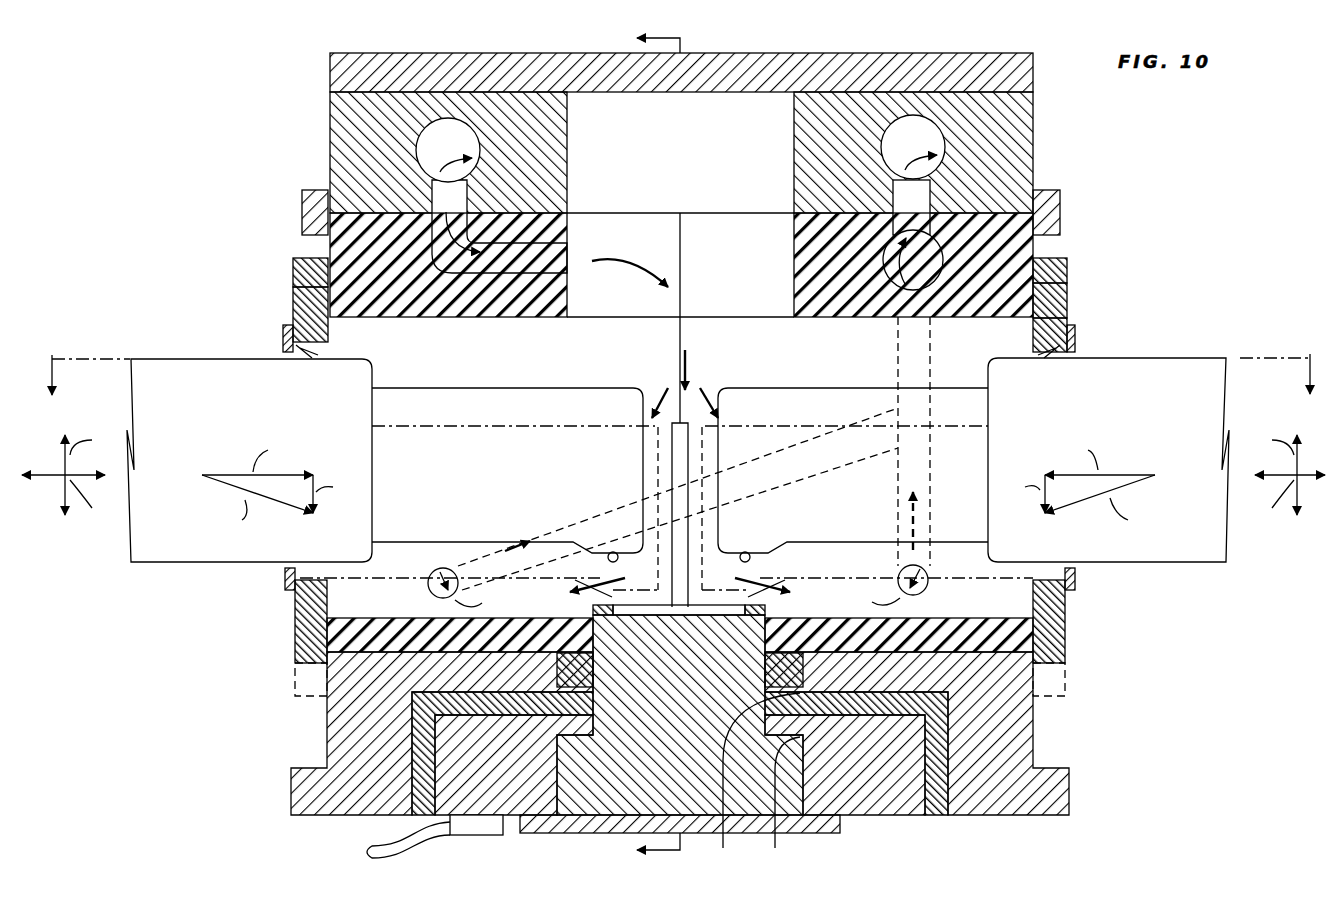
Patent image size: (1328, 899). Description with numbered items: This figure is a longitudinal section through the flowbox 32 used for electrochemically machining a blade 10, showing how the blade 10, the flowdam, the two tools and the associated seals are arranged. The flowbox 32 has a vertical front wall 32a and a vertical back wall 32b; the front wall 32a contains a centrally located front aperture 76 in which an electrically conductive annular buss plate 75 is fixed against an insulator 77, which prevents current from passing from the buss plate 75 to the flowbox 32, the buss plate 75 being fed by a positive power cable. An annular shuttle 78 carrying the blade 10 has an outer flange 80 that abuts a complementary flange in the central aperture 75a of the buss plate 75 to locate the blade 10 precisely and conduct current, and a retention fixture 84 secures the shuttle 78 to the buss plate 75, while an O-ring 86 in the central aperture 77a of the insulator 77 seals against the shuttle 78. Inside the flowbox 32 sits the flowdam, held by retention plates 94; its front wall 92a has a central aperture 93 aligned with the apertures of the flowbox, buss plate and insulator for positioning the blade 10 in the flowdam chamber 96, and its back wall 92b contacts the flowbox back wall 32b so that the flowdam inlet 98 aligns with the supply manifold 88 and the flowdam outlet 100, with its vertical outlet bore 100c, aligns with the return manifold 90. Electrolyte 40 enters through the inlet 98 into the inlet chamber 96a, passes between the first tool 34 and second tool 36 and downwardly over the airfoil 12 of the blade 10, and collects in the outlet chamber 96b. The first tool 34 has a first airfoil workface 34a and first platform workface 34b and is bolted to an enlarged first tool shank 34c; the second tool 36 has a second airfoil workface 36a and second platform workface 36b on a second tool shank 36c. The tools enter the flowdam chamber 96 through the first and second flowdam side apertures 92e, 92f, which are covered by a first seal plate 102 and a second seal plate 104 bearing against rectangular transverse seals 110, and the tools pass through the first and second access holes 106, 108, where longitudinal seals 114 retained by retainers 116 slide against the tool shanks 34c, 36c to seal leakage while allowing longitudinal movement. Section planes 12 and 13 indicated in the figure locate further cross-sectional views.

The blade 10 is at (684, 622).
The airfoil 12 is at (673, 440).
The section line 13 is at (642, 446).
The flowbox 32 is at (1048, 130).
The front wall 32a is at (1033, 745).
The back wall 32b is at (330, 118).
The first tool 34 is at (845, 388).
The first airfoil workface 34a is at (712, 442).
The first platform workface 34b is at (745, 552).
The first tool shank 34c is at (1141, 416).
The second tool 36 is at (490, 388).
The second airfoil workface 36a is at (652, 442).
The second platform workface 36b is at (613, 552).
The second tool shank 36c is at (276, 411).
The electrolyte 40 is at (640, 268).
The buss plate 75 is at (865, 800).
The central aperture 75a is at (781, 801).
The front aperture 76 is at (945, 818).
The insulator 77 is at (935, 818).
The central aperture 77a is at (752, 779).
The shuttle 78 is at (580, 810).
The outer flange 80 is at (598, 745).
The retention fixture 84 is at (503, 838).
The O-ring 86 is at (550, 628).
The supply manifold 88 is at (460, 151).
The return manifold 90 is at (925, 148).
The front wall 92a is at (412, 655).
The back wall 92b is at (1045, 245).
The first flowdam side aperture 92e is at (1033, 330).
The second flowdam side aperture 92f is at (330, 322).
The central aperture 93 is at (612, 640).
The retention plates 94 is at (302, 195).
The flowdam chamber 96 is at (1067, 298).
The inlet chamber 96a is at (818, 361).
The outlet chamber 96b is at (865, 607).
The flowdam inlet 98 is at (460, 207).
The flowdam outlet 100 is at (930, 207).
The vertical outlet bore 100c is at (938, 270).
The first seal plate 102 is at (1068, 262).
The second seal plate 104 is at (290, 265).
The first access hole 106 is at (1033, 360).
The second access hole 108 is at (322, 345).
The transverse seals 110 is at (300, 283).
The longitudinal seals 114 is at (300, 360).
The retainers 116 is at (283, 335).